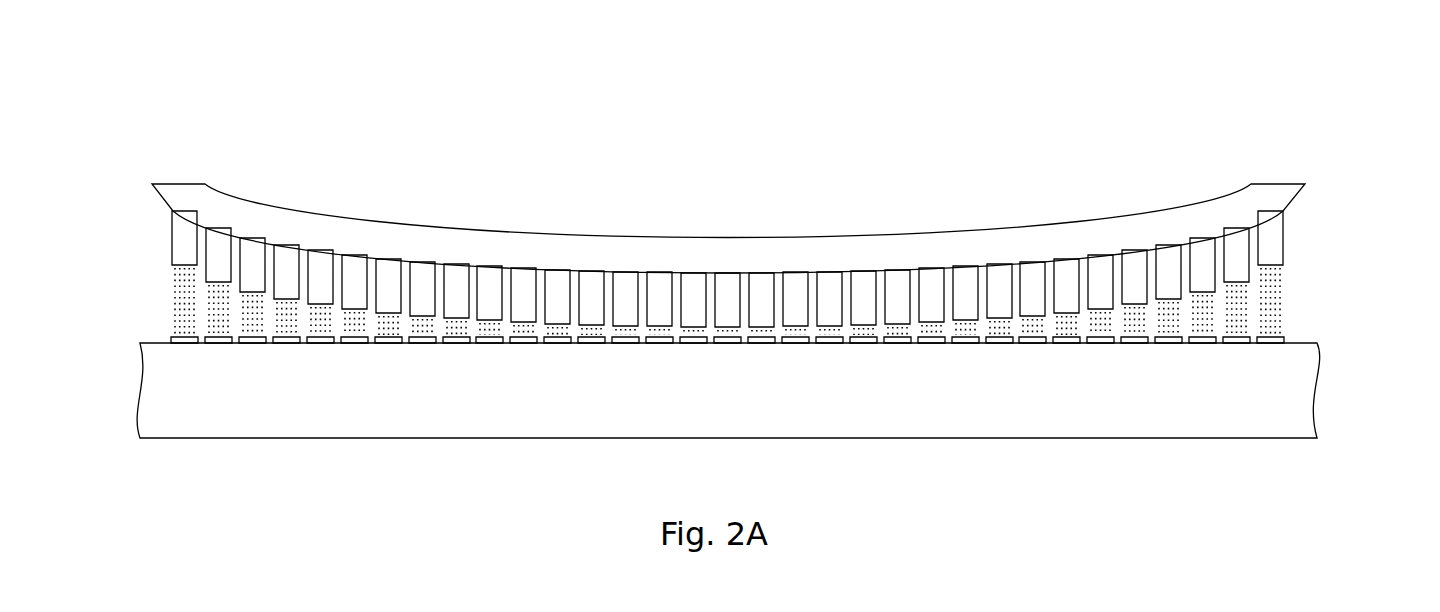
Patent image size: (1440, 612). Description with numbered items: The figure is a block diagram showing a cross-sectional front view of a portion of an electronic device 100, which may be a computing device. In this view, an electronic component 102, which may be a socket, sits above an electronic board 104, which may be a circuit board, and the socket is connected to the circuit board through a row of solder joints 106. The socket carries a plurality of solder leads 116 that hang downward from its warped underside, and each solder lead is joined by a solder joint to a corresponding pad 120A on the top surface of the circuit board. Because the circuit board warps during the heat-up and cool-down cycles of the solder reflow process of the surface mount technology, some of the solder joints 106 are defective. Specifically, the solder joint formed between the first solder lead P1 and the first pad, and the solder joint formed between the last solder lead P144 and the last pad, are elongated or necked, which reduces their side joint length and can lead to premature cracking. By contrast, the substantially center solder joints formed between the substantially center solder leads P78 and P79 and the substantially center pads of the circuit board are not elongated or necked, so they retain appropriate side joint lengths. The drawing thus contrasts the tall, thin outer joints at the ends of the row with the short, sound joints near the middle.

The electronic device 100 is at (240, 166).
The electronic component 102 is at (517, 245).
The electronic board 104 is at (362, 412).
The solder joints 106 is at (1065, 330).
The solder leads 116 is at (183, 229).
The pads 120A is at (797, 411).
The first solder lead P1 is at (1273, 262).
The substantially center solder lead P78 is at (730, 312).
The substantially center solder lead P79 is at (693, 307).
The last solder lead P144 is at (183, 246).